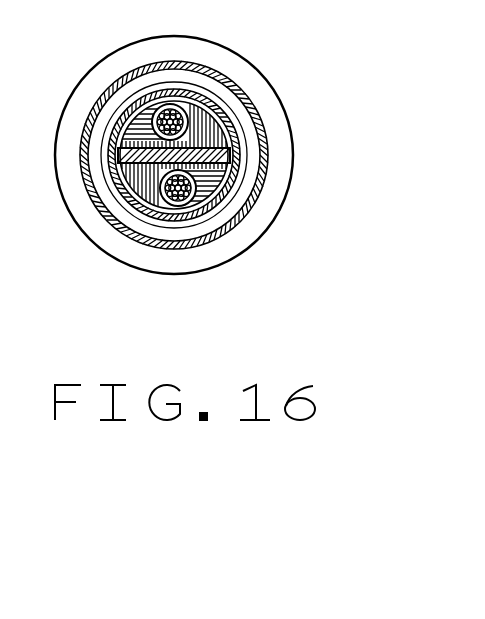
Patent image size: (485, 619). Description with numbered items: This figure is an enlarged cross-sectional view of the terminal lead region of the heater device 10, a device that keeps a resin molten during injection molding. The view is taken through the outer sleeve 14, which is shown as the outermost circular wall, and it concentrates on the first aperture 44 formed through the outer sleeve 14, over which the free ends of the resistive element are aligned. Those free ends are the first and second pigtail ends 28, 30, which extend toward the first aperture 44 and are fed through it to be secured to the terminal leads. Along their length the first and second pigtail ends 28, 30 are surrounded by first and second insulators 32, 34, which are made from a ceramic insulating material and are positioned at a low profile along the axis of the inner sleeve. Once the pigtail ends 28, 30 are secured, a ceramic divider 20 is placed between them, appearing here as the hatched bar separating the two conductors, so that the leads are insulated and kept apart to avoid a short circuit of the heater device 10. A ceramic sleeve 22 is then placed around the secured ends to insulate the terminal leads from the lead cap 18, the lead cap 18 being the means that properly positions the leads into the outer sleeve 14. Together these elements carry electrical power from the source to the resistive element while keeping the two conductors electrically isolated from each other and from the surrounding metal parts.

The heater device 10 is at (318, 188).
The outer sleeve 14 is at (235, 205).
The lead cap 18 is at (268, 124).
The ceramic divider 20 is at (123, 207).
The ceramic sleeve 22 is at (193, 100).
The first pigtail end 28 is at (187, 222).
The second pigtail end 30 is at (141, 128).
The first insulator 32 is at (242, 150).
The second insulator 34 is at (120, 150).
The first aperture 44 is at (224, 112).